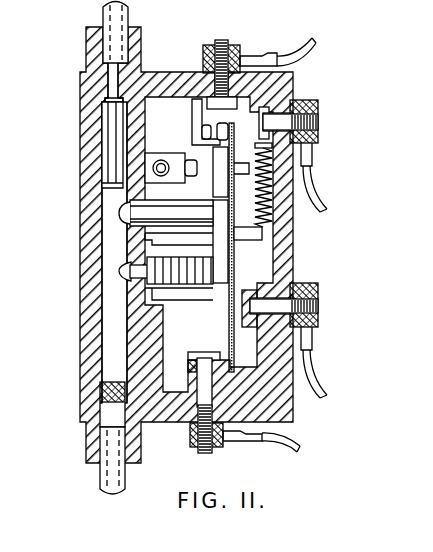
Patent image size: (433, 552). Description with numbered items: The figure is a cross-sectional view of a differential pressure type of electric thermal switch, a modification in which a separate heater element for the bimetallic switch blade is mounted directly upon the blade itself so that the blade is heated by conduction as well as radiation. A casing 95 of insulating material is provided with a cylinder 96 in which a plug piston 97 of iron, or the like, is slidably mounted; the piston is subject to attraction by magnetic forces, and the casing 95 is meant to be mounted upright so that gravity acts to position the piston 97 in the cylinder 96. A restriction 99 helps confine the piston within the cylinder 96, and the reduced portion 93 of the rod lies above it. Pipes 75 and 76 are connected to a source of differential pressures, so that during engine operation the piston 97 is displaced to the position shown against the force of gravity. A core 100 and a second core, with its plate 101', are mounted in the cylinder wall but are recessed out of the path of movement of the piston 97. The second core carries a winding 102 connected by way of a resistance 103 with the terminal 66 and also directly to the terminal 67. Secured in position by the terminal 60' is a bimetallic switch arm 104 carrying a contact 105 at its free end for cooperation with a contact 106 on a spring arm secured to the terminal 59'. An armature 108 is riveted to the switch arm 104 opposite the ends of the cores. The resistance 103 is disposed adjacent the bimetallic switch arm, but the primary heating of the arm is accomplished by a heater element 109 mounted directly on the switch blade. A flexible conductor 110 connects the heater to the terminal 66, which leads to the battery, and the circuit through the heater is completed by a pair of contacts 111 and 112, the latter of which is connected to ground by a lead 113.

The pipe 75 is at (131, 14).
The pipe 76 is at (100, 478).
The reduced stem 93 is at (110, 83).
The casing 95 is at (80, 318).
The cylinder 96 is at (100, 344).
The plug piston 97 is at (100, 133).
The restriction 99 is at (99, 402).
The core 100 is at (169, 199).
The contact plate 101' is at (226, 247).
The winding 102 is at (120, 272).
The resistance 103 is at (300, 207).
The bimetallic switch arm 104 is at (226, 346).
The contact 105 is at (221, 124).
The contact 106 is at (198, 121).
The armature 108 is at (235, 246).
The heater element 109 is at (233, 174).
The flexible conductor 110 is at (229, 132).
The contact 111 is at (202, 130).
The contact 112 is at (193, 152).
The lead 113 is at (165, 305).
The terminal 59' is at (259, 58).
The terminal 60' is at (245, 415).
The terminal 66 is at (318, 118).
The terminal 67 is at (318, 306).